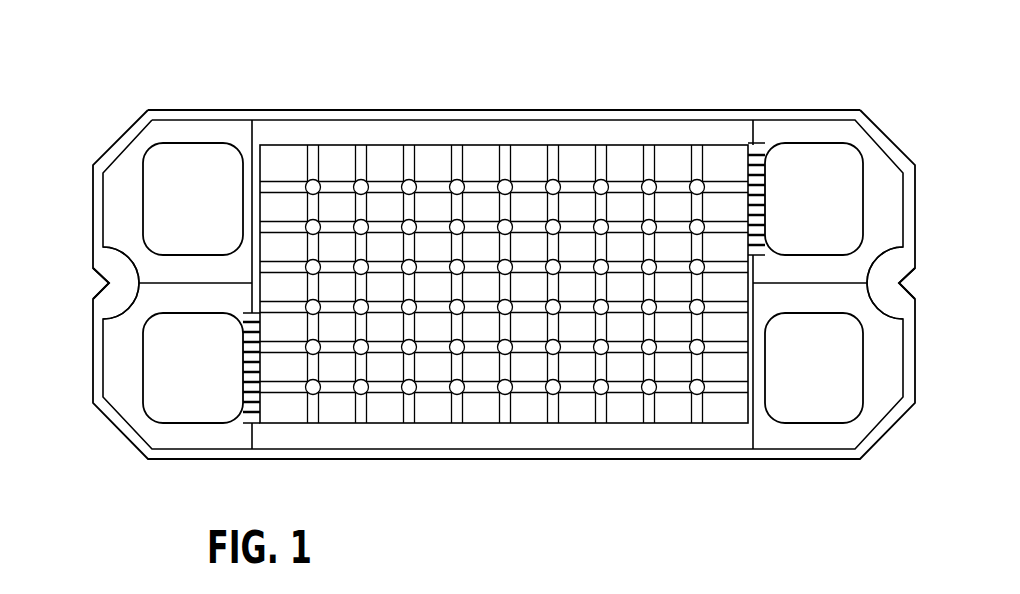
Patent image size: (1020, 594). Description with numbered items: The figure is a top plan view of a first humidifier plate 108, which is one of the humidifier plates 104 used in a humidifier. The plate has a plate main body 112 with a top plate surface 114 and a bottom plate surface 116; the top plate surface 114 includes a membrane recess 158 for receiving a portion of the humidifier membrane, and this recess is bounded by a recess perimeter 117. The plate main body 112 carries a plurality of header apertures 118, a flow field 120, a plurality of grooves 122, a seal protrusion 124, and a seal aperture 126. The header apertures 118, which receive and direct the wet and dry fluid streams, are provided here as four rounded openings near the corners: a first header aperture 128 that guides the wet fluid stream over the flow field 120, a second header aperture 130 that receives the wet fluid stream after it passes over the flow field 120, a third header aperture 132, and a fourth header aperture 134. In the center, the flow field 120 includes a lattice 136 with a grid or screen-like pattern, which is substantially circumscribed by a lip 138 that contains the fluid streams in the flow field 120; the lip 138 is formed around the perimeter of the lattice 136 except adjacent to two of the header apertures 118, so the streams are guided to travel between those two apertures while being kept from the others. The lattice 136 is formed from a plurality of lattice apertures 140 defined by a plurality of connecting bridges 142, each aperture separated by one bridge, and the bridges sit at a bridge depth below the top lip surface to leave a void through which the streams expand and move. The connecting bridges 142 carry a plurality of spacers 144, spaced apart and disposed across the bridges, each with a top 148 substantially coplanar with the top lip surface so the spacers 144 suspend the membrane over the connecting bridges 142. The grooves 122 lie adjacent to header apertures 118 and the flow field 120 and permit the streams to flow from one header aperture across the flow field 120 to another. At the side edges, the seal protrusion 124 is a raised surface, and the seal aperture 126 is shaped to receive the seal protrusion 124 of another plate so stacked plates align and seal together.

The humidifier plate 104 is at (137, 105).
The first humidifier plate 108 is at (504, 250).
The plate main body 112 is at (276, 108).
The top plate surface 114 is at (354, 108).
The bottom plate surface 116 is at (600, 118).
The recess perimeter 117 is at (202, 108).
The header apertures 118 is at (464, 287).
The flow field 120 is at (434, 156).
The grooves 122 is at (759, 156).
The seal protrusion 124 is at (91, 283).
The seal aperture 126 is at (945, 273).
The first header aperture 128 is at (151, 425).
The second header aperture 130 is at (811, 141).
The third header aperture 132 is at (811, 427).
The fourth header aperture 134 is at (142, 153).
The lattice 136 is at (504, 297).
The lip 138 is at (672, 145).
The lattice apertures 140 is at (523, 145).
The connecting bridges 142 is at (505, 427).
The spacers 144 is at (598, 395).
The top of spacer 148 is at (613, 451).
The membrane recess 158 is at (292, 116).